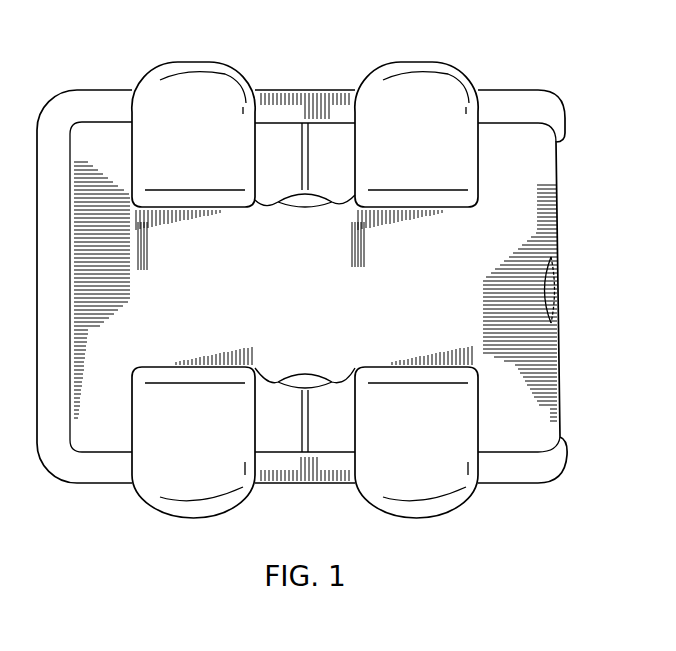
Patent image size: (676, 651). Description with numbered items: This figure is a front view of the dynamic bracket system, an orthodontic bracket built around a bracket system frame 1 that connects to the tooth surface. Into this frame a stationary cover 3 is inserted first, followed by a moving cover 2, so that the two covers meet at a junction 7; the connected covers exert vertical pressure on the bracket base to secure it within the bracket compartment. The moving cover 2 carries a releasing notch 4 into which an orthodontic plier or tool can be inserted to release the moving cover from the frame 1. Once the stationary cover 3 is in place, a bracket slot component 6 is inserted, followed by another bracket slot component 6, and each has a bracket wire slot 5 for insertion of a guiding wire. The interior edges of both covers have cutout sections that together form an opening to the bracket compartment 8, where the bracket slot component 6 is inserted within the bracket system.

The bracket system frame 1 is at (510, 89).
The moving cover 2 is at (510, 165).
The stationary cover 3 is at (96, 433).
The releasing notch 4 is at (553, 290).
The bracket wire slot 5 is at (186, 297).
The bracket slot component 6 is at (172, 62).
The junction between the moving and stationary covers 7 is at (288, 412).
The opening to the bracket compartment 8 is at (316, 208).